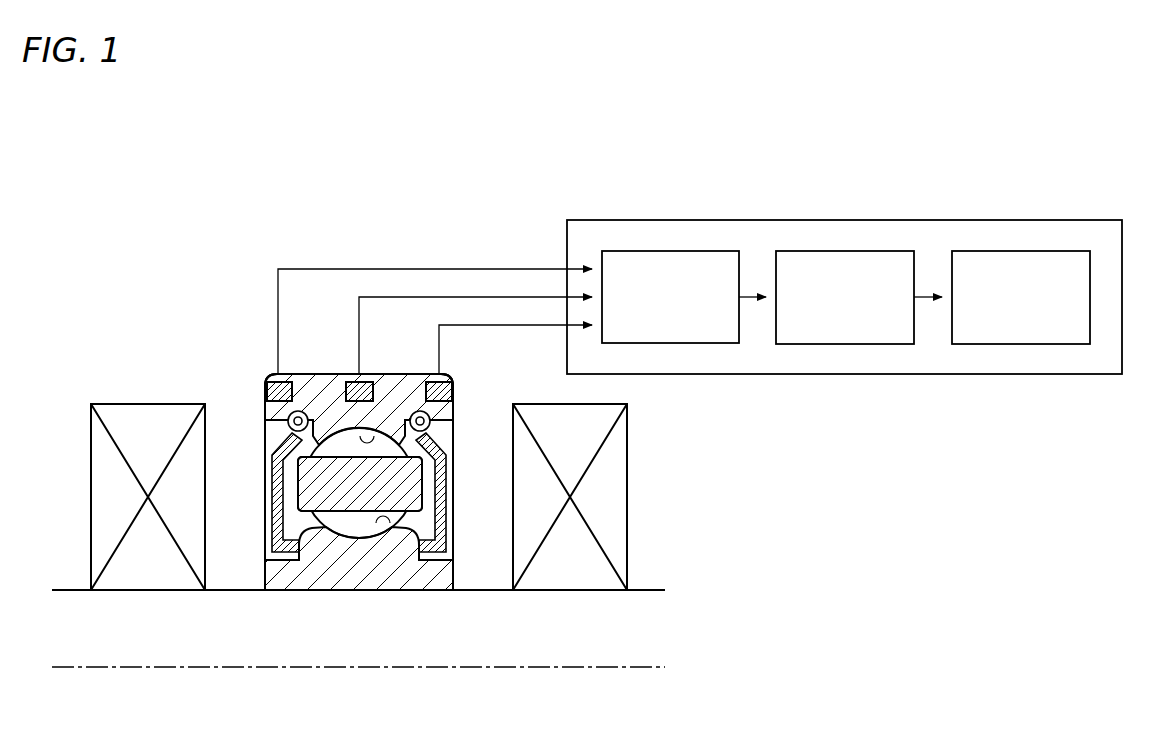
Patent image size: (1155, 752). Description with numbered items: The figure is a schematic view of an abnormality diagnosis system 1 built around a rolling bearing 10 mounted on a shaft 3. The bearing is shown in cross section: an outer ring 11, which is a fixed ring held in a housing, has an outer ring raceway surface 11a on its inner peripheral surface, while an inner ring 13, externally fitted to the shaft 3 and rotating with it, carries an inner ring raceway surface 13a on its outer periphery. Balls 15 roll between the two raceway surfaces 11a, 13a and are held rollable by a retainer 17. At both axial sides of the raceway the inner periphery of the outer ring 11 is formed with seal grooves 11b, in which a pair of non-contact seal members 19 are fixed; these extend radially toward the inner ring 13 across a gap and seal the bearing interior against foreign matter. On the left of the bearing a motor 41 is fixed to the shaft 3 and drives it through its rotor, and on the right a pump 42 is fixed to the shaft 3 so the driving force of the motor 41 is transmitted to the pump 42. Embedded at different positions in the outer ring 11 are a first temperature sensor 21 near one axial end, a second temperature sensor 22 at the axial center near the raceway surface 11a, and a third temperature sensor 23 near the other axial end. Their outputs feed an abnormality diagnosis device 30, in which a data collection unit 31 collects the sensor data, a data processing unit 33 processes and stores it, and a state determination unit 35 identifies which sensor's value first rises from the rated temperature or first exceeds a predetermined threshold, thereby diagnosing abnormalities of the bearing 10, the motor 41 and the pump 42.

The abnormality diagnosis system 1 is at (130, 176).
The shaft 3 is at (622, 626).
The rolling bearing 10 is at (355, 464).
The outer ring 11 is at (355, 328).
The outer ring raceway surface 11a is at (373, 430).
The seal grooves 11b is at (265, 406).
The inner ring 13 is at (362, 617).
The inner ring raceway surface 13a is at (383, 526).
The balls 15 is at (348, 524).
The retainer 17 is at (333, 492).
The seal members 19 is at (268, 518).
The first temperature sensor 21 is at (266, 382).
The second temperature sensor 22 is at (355, 382).
The third temperature sensor 23 is at (438, 382).
The abnormality diagnosis device 30 is at (844, 261).
The data collection unit 31 is at (664, 250).
The data processing unit 33 is at (846, 250).
The state determination unit 35 is at (1040, 250).
The motor 41 is at (90, 487).
The pump 42 is at (566, 478).